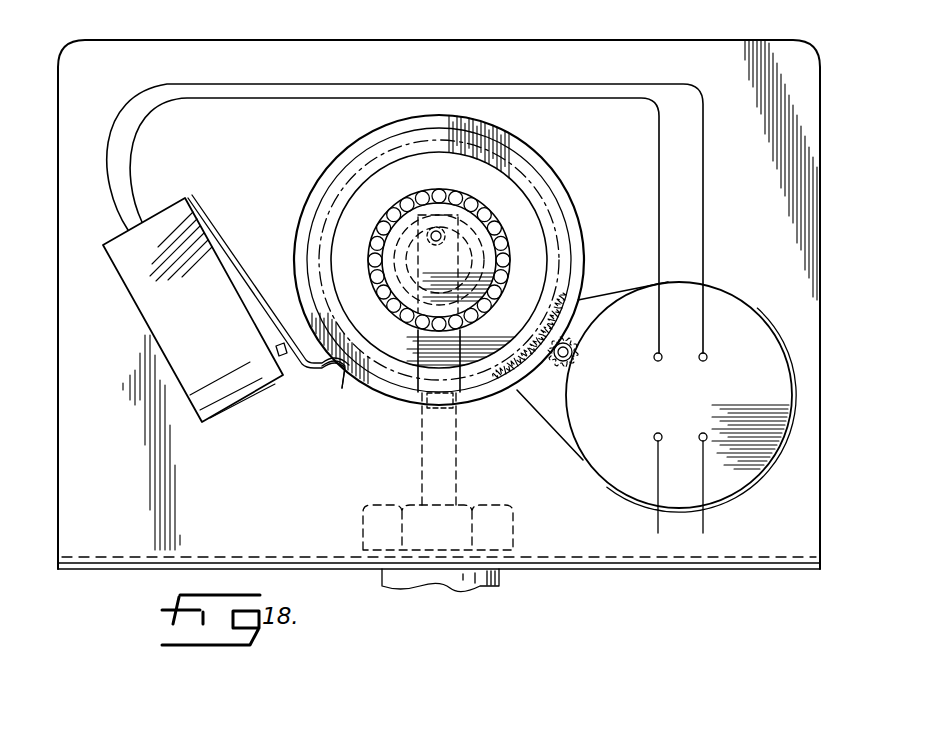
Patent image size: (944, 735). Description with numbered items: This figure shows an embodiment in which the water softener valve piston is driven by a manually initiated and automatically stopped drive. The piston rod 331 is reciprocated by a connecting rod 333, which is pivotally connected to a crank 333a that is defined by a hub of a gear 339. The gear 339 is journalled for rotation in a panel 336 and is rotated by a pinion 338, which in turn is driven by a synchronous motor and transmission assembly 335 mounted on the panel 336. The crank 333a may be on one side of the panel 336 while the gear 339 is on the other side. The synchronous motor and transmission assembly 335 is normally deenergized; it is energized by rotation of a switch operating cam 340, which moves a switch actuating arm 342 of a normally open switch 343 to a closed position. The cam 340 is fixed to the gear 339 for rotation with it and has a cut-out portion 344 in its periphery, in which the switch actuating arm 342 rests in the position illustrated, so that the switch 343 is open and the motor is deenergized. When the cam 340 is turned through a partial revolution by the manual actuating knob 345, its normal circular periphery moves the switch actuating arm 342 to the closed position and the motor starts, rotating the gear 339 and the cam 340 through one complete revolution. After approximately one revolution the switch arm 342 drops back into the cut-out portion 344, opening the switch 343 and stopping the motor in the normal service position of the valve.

The panel 336 is at (785, 42).
The switch operating cam 340 is at (318, 182).
The manual actuating knob 345 is at (493, 218).
The crank 333a is at (400, 233).
The switch actuating arm 342 is at (245, 278).
The normally open switch 343 is at (183, 380).
The cut-out portion 344 is at (343, 377).
The connecting rod 333 is at (410, 400).
The piston rod 331 is at (437, 468).
The gear 339 is at (585, 295).
The pinion 338 is at (580, 368).
The synchronous motor and transmission assembly 335 is at (737, 482).